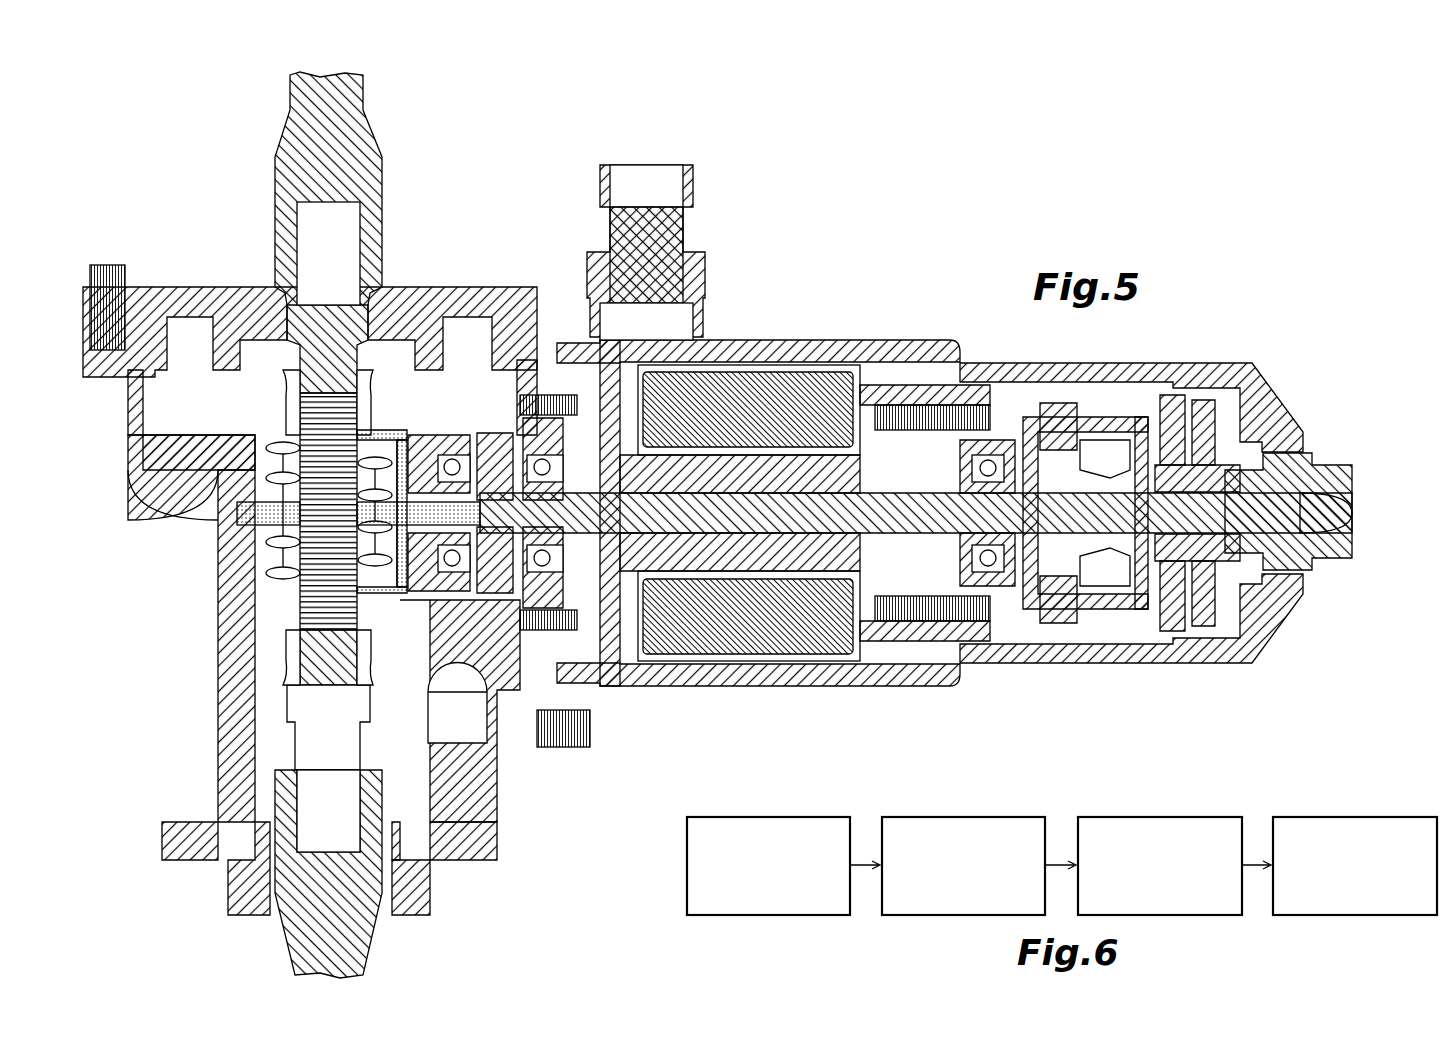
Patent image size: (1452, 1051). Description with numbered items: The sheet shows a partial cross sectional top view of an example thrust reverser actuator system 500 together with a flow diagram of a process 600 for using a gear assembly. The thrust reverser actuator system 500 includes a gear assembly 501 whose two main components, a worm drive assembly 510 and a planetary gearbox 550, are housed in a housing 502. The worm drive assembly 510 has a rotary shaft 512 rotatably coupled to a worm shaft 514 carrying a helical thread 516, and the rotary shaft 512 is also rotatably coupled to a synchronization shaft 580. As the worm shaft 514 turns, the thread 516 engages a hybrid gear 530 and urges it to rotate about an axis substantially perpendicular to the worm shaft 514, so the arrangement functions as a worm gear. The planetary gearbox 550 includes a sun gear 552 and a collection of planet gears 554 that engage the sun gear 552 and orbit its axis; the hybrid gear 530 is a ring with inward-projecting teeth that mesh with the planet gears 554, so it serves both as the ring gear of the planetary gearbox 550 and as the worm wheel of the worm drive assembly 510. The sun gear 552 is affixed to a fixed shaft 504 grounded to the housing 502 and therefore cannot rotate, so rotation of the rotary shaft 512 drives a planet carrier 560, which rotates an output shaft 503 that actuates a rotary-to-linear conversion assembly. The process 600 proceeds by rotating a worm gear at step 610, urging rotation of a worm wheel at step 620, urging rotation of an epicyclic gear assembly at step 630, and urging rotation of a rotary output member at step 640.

In FIG. 5, the thrust reverser actuator system 500 is at (936, 293).
In FIG. 5, the gear assembly 501 is at (208, 612).
In FIG. 5, the housing 502 is at (160, 843).
In FIG. 5, the output shaft 503 is at (480, 470).
In FIG. 5, the fixed shaft 504 is at (237, 512).
In FIG. 5, the worm drive assembly 510 is at (286, 747).
In FIG. 5, the rotary shaft 512 is at (310, 238).
In FIG. 5, the worm shaft 514 is at (385, 568).
In FIG. 5, the helical thread 516 is at (265, 578).
In FIG. 5, the hybrid gear 530 is at (290, 377).
In FIG. 5, the planetary gearbox 550 is at (285, 405).
In FIG. 5, the sun gear 552 is at (270, 545).
In FIG. 5, the planet gears 554 is at (265, 457).
In FIG. 5, the planet carrier 560 is at (420, 437).
In FIG. 5, the synchronization shaft 580 is at (290, 937).
In FIG. 6, the process 600 is at (720, 804).
In FIG. 6, the rotate worm gear step 610 is at (762, 817).
In FIG. 6, the rotate worm wheel step 620 is at (966, 817).
In FIG. 6, the rotate epicyclic gear assembly step 630 is at (1156, 817).
In FIG. 6, the rotate output member step 640 is at (1361, 817).